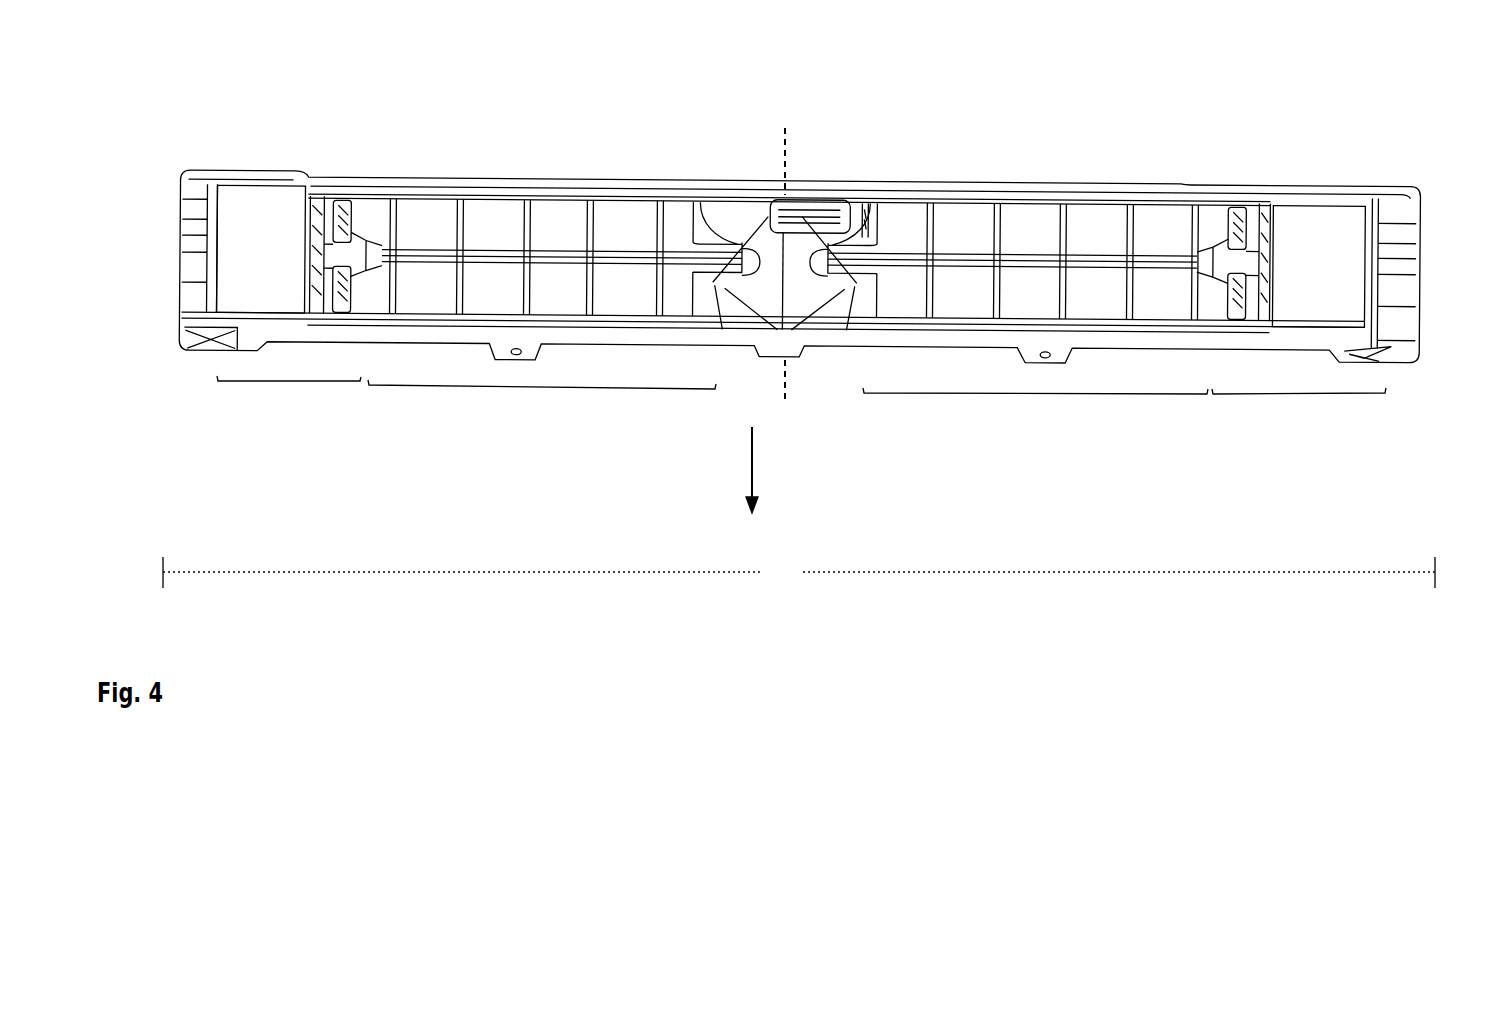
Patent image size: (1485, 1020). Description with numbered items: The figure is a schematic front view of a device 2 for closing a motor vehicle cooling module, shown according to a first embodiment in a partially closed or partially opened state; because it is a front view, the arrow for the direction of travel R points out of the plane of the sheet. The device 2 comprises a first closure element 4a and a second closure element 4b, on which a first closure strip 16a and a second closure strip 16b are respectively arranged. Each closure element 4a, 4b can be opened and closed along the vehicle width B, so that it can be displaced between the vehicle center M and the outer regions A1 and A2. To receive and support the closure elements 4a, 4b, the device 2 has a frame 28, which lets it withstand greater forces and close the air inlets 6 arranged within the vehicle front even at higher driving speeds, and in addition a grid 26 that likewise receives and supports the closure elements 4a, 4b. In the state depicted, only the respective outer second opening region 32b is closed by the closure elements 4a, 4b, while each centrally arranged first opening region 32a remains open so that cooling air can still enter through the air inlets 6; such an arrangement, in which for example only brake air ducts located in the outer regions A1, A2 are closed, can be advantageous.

The device 2 is at (1194, 458).
The first closure element 4a is at (1290, 208).
The second closure element 4b is at (247, 293).
The air inlets 6 is at (1090, 211).
The first closure strip 16a is at (1233, 207).
The second closure strip 16b is at (348, 198).
The grid 26 is at (1060, 215).
The frame 28 is at (472, 178).
The first opening region 32a is at (788, 416).
The second opening region 32b is at (801, 410).
The outer region A1 is at (1397, 158).
The outer region A2 is at (203, 142).
The vehicle center M is at (788, 251).
The direction of travel R is at (750, 462).
The vehicle width B is at (799, 572).